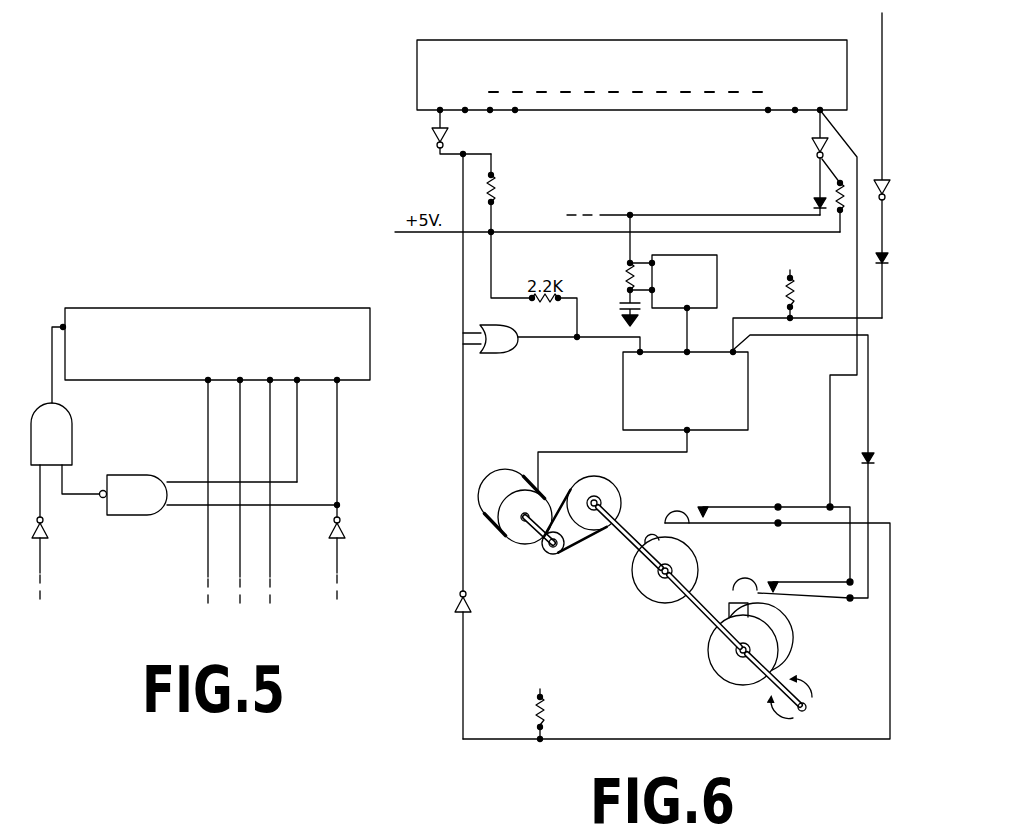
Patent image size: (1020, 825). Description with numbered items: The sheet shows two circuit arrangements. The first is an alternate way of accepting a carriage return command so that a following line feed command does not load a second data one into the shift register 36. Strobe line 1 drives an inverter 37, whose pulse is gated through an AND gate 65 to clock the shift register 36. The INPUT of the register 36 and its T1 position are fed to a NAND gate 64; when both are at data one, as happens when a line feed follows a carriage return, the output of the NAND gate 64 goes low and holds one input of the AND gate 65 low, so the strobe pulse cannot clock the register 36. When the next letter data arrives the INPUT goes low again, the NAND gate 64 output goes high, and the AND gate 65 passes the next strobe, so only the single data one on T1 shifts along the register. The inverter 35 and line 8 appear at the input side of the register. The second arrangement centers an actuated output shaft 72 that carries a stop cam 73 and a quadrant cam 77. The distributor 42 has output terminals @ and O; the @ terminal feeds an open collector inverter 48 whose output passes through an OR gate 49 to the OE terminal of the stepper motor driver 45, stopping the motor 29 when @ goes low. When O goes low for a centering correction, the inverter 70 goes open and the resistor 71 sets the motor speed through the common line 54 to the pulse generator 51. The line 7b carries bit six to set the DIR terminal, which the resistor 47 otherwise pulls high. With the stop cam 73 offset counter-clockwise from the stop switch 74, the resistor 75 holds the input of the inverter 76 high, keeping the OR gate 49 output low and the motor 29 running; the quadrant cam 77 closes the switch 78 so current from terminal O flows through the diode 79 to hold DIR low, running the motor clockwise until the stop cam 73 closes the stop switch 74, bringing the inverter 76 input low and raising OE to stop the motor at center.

In FIG. 5, the shift register 36 is at (190, 303).
In FIG. 5, the AND gate 65 is at (72, 439).
In FIG. 5, the NAND gate 64 is at (127, 517).
In FIG. 5, the inverter 37 is at (51, 528).
In FIG. 5, the inverter 35 is at (328, 526).
In FIG. 5, the strobe line 1 is at (47, 562).
In FIG. 5, the data input line 8 is at (330, 563).
In FIG. 6, the distributor 42 is at (412, 72).
In FIG. 6, the inverter 48 is at (455, 133).
In FIG. 6, the inverter 70 is at (814, 157).
In FIG. 6, the resistor 71 is at (816, 190).
In FIG. 6, the common line 54 is at (693, 201).
In FIG. 6, the pulse generator 51 is at (720, 286).
In FIG. 6, the OR gate 49 is at (493, 355).
In FIG. 6, the stepper motor driver 45 is at (753, 394).
In FIG. 6, the resistor 47 is at (798, 292).
In FIG. 6, the diode 79 is at (873, 460).
In FIG. 6, the motor 29 is at (491, 471).
In FIG. 6, the stop cam 73 is at (648, 523).
In FIG. 6, the stop switch 74 is at (716, 503).
In FIG. 6, the switch 78 is at (759, 588).
In FIG. 6, the quadrant cam 77 is at (790, 629).
In FIG. 6, the output shaft 72 is at (812, 712).
In FIG. 6, the inverter 76 is at (478, 605).
In FIG. 6, the resistor 75 is at (552, 719).
In FIG. 6, the line 7b is at (892, 74).